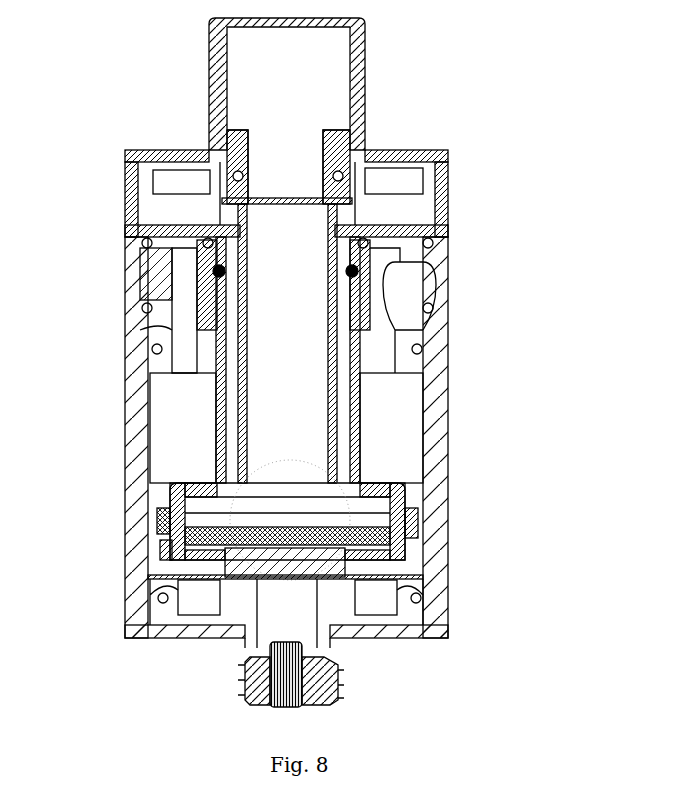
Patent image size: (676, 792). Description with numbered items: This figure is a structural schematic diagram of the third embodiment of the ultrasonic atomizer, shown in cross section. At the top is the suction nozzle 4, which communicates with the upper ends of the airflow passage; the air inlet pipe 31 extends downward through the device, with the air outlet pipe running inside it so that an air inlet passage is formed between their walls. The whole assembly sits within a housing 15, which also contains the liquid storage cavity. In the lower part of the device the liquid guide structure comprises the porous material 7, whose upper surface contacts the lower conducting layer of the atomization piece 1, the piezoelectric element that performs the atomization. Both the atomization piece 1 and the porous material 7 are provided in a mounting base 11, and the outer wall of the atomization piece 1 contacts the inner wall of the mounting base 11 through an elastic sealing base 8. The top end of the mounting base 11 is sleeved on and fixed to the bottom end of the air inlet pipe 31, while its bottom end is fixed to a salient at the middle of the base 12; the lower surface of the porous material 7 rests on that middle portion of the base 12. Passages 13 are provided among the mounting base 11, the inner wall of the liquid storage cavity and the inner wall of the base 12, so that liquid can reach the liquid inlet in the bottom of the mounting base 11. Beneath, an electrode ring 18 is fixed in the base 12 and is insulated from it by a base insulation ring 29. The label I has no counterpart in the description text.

The suction nozzle 4 is at (209, 50).
The housing 15 is at (428, 355).
The air inlet pipe 31 is at (383, 448).
The elastic sealing base 8 is at (402, 528).
The atomization piece 1 is at (412, 560).
The housing I is at (420, 590).
The electrode ring 18 is at (335, 652).
The base insulation ring 29 is at (240, 672).
The base 12 is at (125, 630).
The porous material 7 is at (200, 572).
The passages 13 is at (165, 548).
The mounting base 11 is at (163, 515).